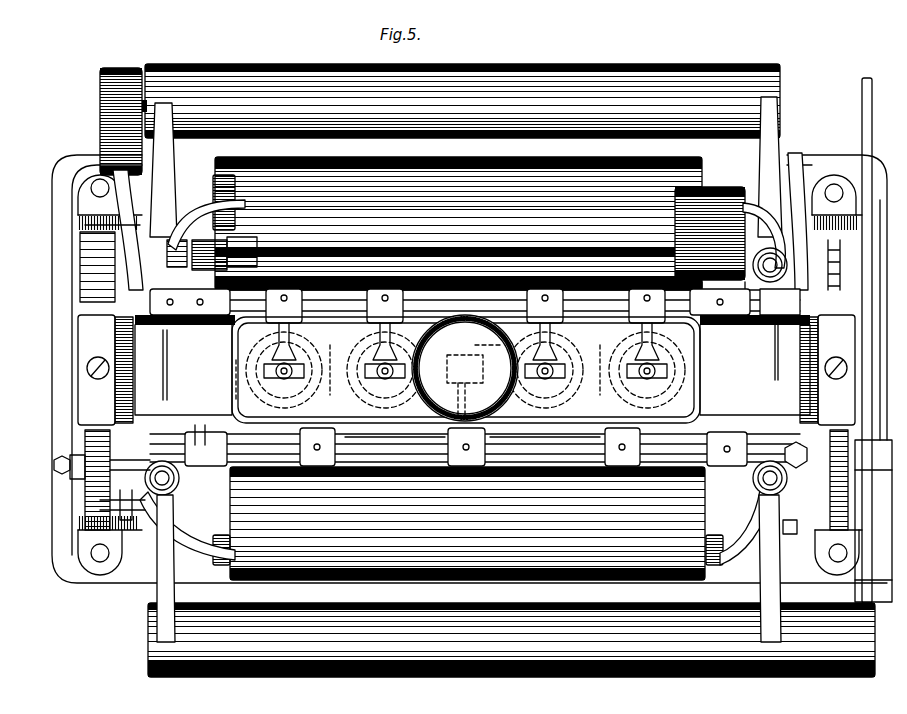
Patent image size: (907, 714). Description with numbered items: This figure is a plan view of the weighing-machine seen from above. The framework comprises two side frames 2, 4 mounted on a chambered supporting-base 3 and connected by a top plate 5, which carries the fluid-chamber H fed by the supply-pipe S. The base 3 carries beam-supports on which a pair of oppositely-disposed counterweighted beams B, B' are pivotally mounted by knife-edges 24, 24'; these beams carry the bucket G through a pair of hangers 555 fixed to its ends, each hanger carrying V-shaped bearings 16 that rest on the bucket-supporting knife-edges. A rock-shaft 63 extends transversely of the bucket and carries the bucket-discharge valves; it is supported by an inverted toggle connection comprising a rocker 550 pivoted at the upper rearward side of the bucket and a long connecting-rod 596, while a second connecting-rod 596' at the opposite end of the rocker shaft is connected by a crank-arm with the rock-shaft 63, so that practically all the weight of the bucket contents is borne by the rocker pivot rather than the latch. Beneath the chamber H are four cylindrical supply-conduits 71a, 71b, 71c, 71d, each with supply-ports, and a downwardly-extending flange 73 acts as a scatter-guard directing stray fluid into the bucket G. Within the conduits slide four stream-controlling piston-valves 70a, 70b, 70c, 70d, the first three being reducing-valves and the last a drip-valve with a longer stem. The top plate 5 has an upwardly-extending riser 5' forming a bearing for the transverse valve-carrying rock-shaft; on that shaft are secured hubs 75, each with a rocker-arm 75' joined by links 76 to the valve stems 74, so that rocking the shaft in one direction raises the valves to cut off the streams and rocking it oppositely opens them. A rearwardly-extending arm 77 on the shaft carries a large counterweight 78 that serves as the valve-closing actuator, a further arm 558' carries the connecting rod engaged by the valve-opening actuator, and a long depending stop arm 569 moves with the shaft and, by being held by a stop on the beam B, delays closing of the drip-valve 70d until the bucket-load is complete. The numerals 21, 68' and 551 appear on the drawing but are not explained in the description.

The counterweighted beam B is at (463, 150).
The counterweighted beam B' is at (511, 586).
The side frame 2 is at (90, 270).
The supporting-base 3 is at (93, 227).
The side frame 4 is at (828, 267).
The top plate 5 is at (796, 445).
The riser arm 5' is at (109, 423).
The V-shaped bearing 16 is at (181, 480).
The link 21 is at (753, 208).
The knife-edge pivot 24 is at (487, 372).
The knife-edge pivot 24' is at (167, 537).
The rock-shaft 63 is at (413, 447).
The arm 68' is at (194, 419).
The stream-controlling valve 70a is at (247, 368).
The stream-controlling valve 70b is at (360, 358).
The stream-controlling valve 70c is at (527, 344).
The drip-valve 70d is at (630, 346).
The supply-conduit 71a is at (250, 390).
The supply-conduit 71b is at (379, 383).
The supply-conduit 71c is at (507, 368).
The supply-conduit 71d is at (591, 377).
The scatter-guard flange 73 is at (533, 427).
The valve stem 74 is at (287, 378).
The hub 75 is at (334, 278).
The rocker-arm 75' is at (534, 278).
The link 76 is at (405, 370).
The rearwardly-extending arm 77 is at (710, 290).
The counterweight 78 is at (675, 213).
The rocker 550 is at (200, 242).
The lever 551 is at (123, 200).
The hanger 555 is at (187, 213).
The rearwardly-extending arm 558' is at (96, 370).
The stop arm 569 is at (800, 183).
The connecting-rod 596 is at (190, 319).
The connecting-rod 596' is at (720, 320).
The bucket G is at (459, 523).
The fluid-chamber H is at (465, 368).
The supply-pipe S is at (510, 343).